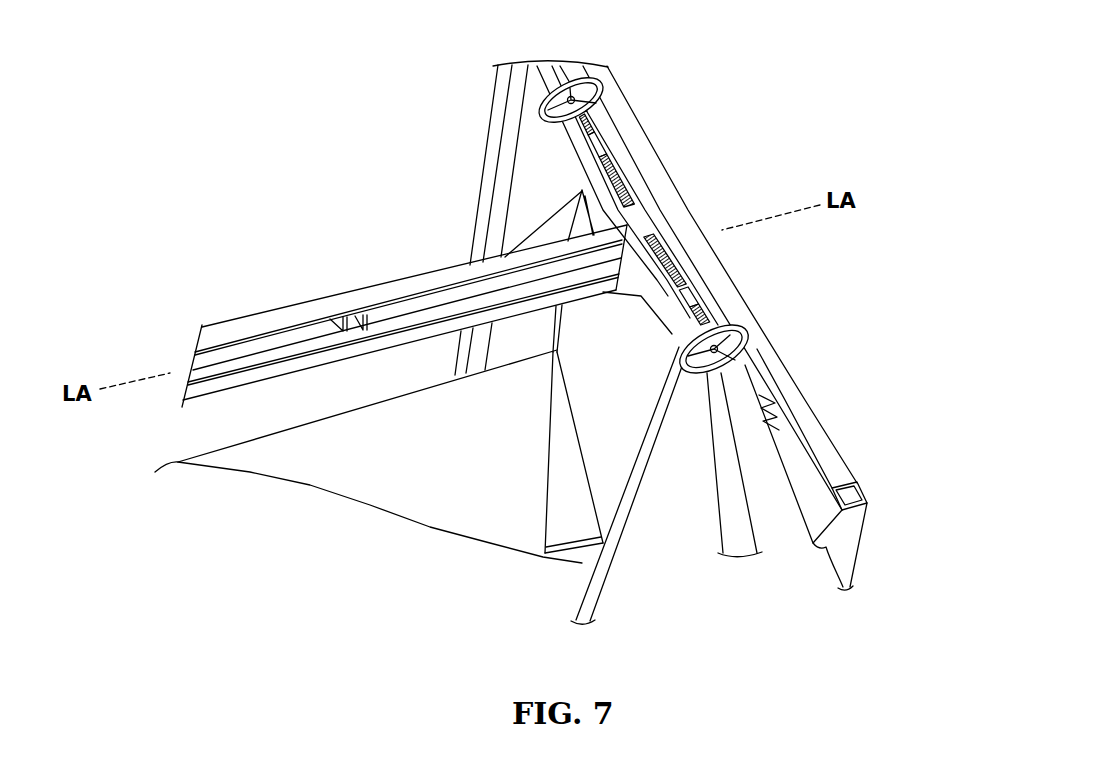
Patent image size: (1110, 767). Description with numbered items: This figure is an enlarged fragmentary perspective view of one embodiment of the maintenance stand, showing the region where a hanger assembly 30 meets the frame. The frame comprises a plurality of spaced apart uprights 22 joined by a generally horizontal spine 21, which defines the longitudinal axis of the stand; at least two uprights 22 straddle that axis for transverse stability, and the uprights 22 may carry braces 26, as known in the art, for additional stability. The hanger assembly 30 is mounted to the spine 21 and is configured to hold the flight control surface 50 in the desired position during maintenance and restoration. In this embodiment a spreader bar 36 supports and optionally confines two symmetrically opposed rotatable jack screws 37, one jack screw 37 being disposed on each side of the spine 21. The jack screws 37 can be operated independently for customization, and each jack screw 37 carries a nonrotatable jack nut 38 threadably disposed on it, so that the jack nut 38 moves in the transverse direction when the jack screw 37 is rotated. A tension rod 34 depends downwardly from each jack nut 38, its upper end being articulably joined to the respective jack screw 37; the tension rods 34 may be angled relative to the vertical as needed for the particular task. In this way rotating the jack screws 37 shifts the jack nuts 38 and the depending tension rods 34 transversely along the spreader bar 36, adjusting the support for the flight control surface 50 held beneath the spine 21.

The spine 21 is at (258, 325).
The uprights 22 is at (485, 226).
The braces 26 is at (723, 495).
The hanger assembly 30 is at (663, 333).
The tension rod 34 is at (567, 322).
The spreader bar 36 is at (633, 278).
The jack screw 37 is at (627, 183).
The jack nut 38 is at (597, 145).
The flight control surface 50 is at (381, 452).